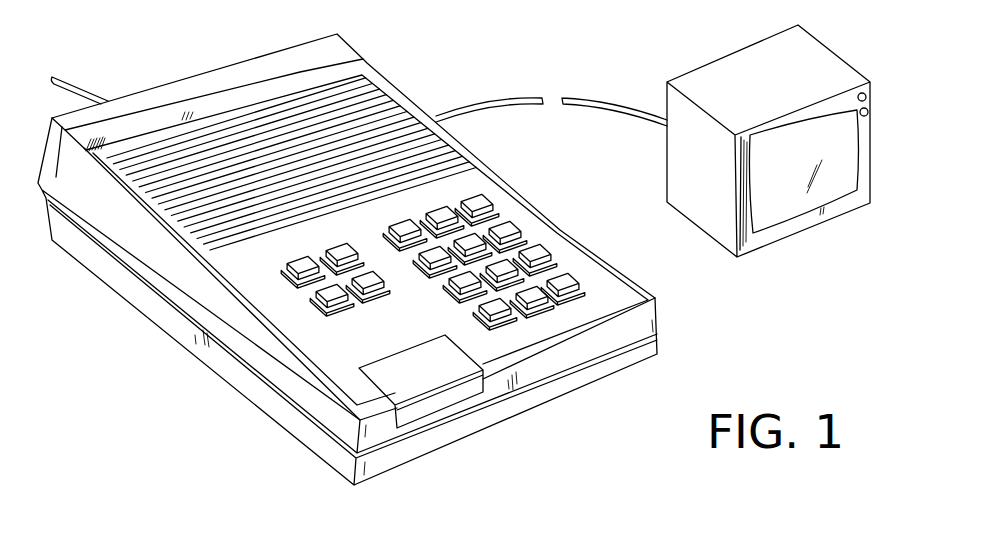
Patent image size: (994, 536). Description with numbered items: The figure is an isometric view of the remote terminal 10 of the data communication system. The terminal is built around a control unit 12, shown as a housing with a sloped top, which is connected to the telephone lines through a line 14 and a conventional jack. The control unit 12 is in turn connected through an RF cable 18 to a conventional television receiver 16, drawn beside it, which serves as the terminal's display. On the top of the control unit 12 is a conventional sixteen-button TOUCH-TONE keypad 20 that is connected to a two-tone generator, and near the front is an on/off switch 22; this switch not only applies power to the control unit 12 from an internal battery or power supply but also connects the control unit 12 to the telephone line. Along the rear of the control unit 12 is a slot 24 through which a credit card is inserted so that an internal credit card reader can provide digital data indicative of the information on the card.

The remote terminal 10 is at (431, 46).
The control unit 12 is at (551, 400).
The line 14 is at (88, 96).
The television receiver 16 is at (807, 222).
The RF cable 18 is at (515, 98).
The TOUCH-TONE keypad 20 is at (545, 252).
The on/off switch 22 is at (435, 380).
The slot 24 is at (160, 107).